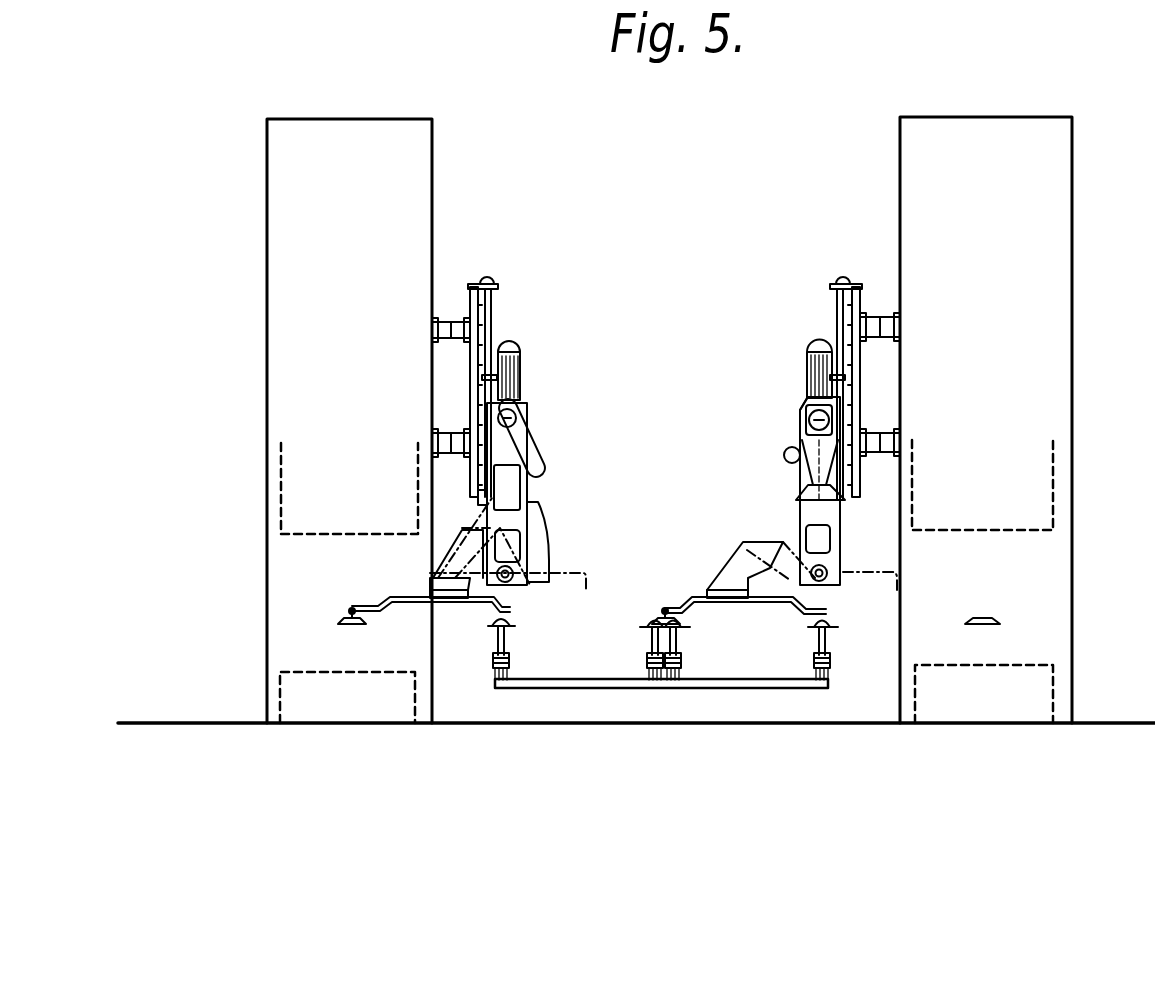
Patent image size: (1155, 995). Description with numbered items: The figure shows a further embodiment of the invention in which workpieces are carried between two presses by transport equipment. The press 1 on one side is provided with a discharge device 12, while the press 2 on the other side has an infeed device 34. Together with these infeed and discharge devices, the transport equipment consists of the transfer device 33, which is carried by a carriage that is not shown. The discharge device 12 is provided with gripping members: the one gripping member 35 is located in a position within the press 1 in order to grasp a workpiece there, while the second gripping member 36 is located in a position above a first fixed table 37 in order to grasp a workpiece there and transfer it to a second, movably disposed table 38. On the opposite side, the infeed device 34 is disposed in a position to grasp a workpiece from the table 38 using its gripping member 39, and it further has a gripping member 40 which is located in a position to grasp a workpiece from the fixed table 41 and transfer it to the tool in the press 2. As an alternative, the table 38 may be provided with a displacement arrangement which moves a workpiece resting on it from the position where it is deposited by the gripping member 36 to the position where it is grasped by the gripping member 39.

The press 1 is at (418, 167).
The press 2 is at (1040, 238).
The discharge device 12 is at (520, 418).
The transfer device 33 is at (583, 688).
The infeed device 34 is at (822, 396).
The gripping member 35 is at (347, 612).
The gripping member 36 is at (495, 610).
The first fixed table 37 is at (519, 662).
The movably disposed table 38 is at (664, 640).
The gripping member 39 is at (670, 612).
The gripping member 40 is at (838, 615).
The fixed table 41 is at (826, 640).